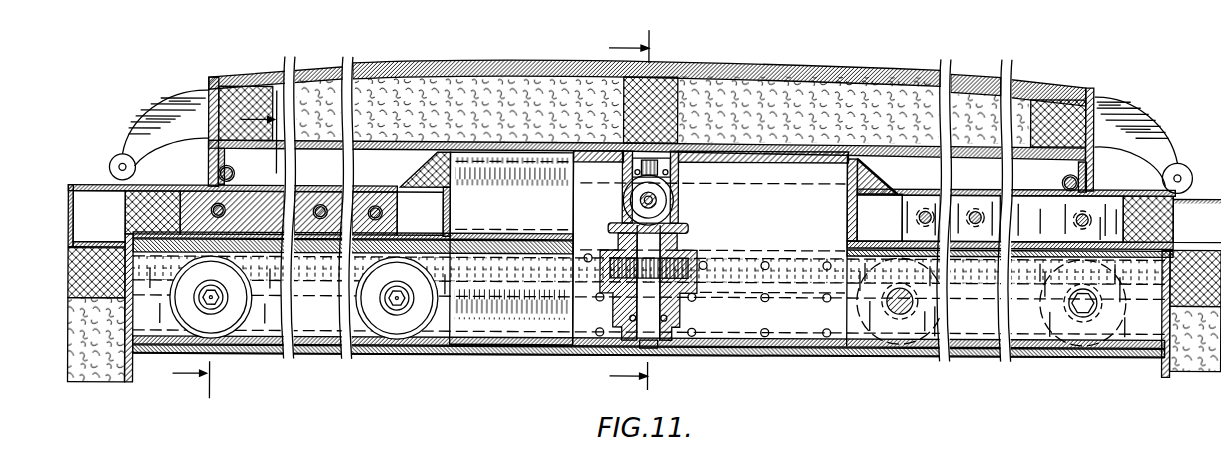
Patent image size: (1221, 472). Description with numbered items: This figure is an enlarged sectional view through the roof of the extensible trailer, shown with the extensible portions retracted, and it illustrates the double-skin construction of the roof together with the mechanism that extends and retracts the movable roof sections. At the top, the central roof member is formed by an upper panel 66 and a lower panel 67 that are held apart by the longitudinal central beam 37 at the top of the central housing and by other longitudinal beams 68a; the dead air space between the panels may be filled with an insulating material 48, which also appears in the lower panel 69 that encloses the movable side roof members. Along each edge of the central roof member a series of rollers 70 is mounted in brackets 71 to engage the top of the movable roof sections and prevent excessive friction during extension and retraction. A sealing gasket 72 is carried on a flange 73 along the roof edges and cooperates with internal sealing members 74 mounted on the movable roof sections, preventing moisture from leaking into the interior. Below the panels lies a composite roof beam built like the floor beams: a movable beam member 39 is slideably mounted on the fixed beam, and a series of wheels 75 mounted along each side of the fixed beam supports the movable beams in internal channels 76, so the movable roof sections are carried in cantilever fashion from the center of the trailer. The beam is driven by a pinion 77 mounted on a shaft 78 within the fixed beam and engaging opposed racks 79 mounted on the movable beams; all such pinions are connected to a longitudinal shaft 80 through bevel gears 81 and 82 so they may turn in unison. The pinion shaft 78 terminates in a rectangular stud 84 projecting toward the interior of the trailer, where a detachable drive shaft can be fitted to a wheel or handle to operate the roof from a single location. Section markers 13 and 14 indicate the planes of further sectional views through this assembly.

The section line 13- 13 is at (622, 215).
The section line 14- 14 is at (220, 245).
The longitudinal central beam 37 is at (662, 85).
The movable beam member 39 is at (358, 356).
The insulating material 48 is at (452, 88).
The upper panel 66 is at (882, 70).
The lower panel 67 is at (815, 142).
The longitudinal beam 68a is at (1055, 99).
The lower panel 69 is at (148, 226).
The roller 70 is at (110, 160).
The bracket 71 is at (155, 107).
The sealing gasket 72 is at (233, 173).
The flange 73 is at (207, 157).
The internal sealing member 74 is at (420, 176).
The wheel 75 is at (198, 327).
The internal channel 76 is at (263, 340).
The pinion 77 is at (622, 255).
The shaft 78 is at (633, 177).
The rack 79 is at (810, 256).
The longitudinal shaft 80 is at (640, 200).
The bevel gear 81 is at (690, 229).
The bevel gear 82 is at (674, 199).
The rectangular stud 84 is at (657, 350).